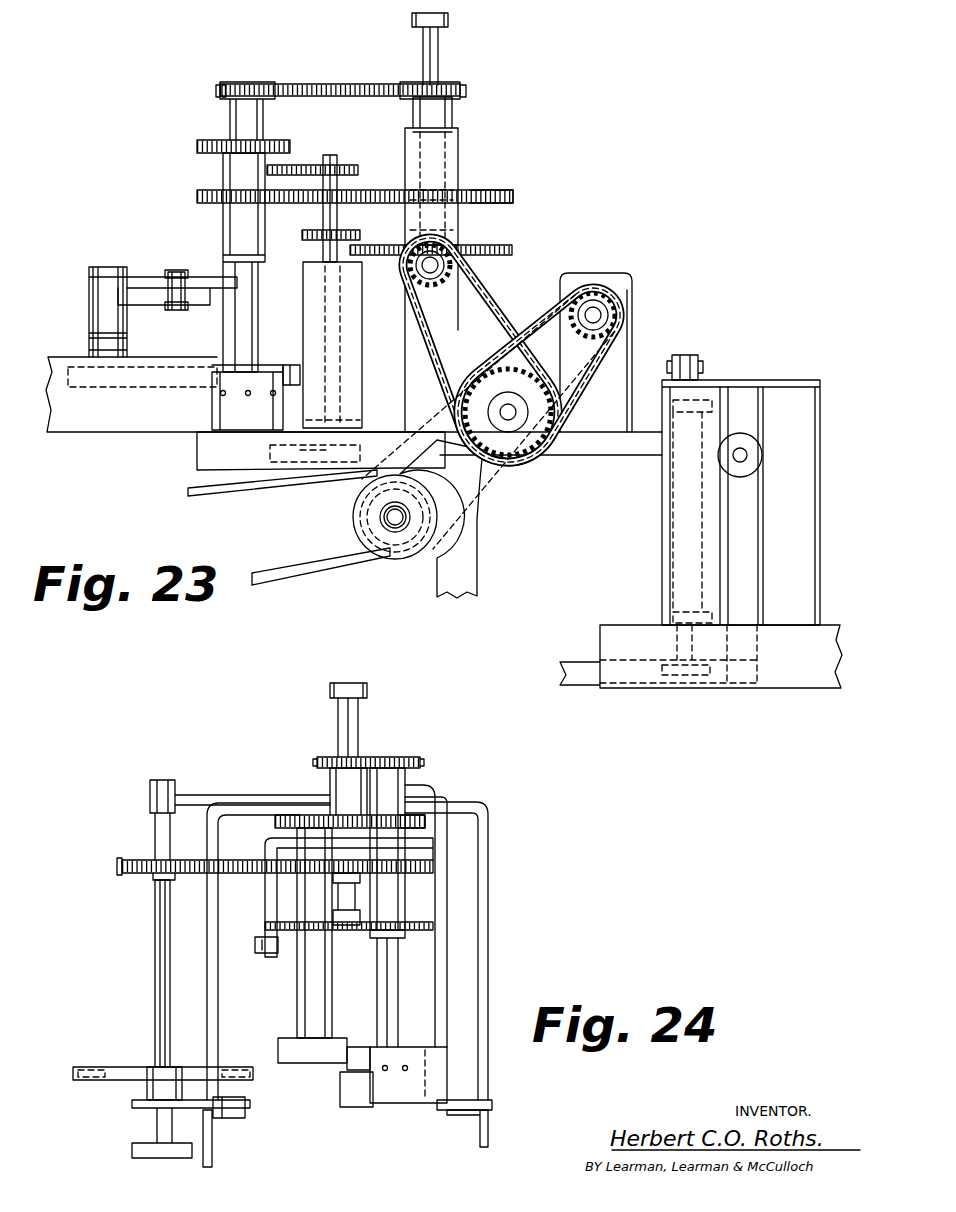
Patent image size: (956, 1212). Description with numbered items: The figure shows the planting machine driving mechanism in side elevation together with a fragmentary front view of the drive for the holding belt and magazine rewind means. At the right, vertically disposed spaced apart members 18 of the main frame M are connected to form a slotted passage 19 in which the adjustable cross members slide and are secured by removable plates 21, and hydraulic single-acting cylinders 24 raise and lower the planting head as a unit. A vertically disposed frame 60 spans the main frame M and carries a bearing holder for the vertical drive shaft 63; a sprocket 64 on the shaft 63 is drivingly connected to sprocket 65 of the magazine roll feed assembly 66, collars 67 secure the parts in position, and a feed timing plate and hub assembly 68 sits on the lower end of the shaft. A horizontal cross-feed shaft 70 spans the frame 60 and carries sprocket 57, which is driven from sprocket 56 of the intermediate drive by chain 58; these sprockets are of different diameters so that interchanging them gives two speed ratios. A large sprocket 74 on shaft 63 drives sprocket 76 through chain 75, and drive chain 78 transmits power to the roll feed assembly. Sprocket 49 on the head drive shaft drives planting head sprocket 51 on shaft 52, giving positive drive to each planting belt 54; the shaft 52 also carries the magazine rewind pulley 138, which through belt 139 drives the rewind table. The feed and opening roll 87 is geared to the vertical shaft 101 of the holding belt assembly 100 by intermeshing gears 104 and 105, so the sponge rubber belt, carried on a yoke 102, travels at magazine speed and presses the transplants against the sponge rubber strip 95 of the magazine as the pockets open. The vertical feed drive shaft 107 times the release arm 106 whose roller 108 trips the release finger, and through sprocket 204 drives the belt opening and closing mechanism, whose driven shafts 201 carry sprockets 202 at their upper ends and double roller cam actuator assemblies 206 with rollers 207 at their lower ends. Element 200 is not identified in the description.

In FIG. 23, the vertically disposed spaced apart members 18 is at (786, 397).
In FIG. 23, the slotted passage 19 is at (740, 397).
In FIG. 23, the removable plates 21 is at (728, 467).
In FIG. 23, the hydraulic single-acting cylinders 24 is at (692, 355).
In FIG. 23, the sprocket 49 is at (601, 300).
In FIG. 23, the planting head sprocket 51 is at (420, 506).
In FIG. 23, the shaft 52 is at (392, 524).
In FIG. 23, the planting belt 54 is at (462, 592).
In FIG. 23, the sprocket 56 is at (523, 443).
In FIG. 23, the sprocket 57 is at (416, 268).
In FIG. 23, the chain 58 is at (493, 307).
In FIG. 23, the vertically disposed frame 60 is at (404, 150).
In FIG. 23, the vertical drive shaft 63 is at (441, 60).
In FIG. 24, the vertical drive shaft 63 is at (360, 728).
In FIG. 23, the sprocket 64 is at (463, 91).
In FIG. 23, the sprocket 65 is at (218, 91).
In FIG. 23, the magazine roll feed assembly 66 is at (247, 83).
In FIG. 23, the collars 67 is at (461, 160).
In FIG. 23, the feed timing plate and hub assembly 68 is at (496, 251).
In FIG. 24, the feed timing plate and hub assembly 68 is at (434, 928).
In FIG. 23, the cross-feed shaft 70 is at (416, 291).
In FIG. 23, the large sprocket 74 is at (512, 195).
In FIG. 24, the large sprocket 74 is at (434, 866).
In FIG. 23, the chain 75 is at (310, 204).
In FIG. 24, the chain 75 is at (242, 860).
In FIG. 23, the sprocket 76 is at (210, 196).
In FIG. 24, the sprocket 76 is at (122, 870).
In FIG. 23, the drive chain 78 is at (336, 84).
In FIG. 24, the drive chain 78 is at (419, 758).
In FIG. 23, the feed and opening roll 87 is at (235, 408).
In FIG. 24, the feed and opening roll 87 is at (420, 1103).
In FIG. 24, the sponge rubber strip 95 is at (358, 1108).
In FIG. 23, the holding belt assembly 100 is at (292, 366).
In FIG. 24, the holding belt assembly 100 is at (312, 1064).
In FIG. 24, the vertical shaft 101 is at (297, 992).
In FIG. 24, the yoke 102 is at (398, 1022).
In FIG. 24, the gear 104 is at (308, 815).
In FIG. 23, the gear 105 is at (291, 147).
In FIG. 24, the gear 105 is at (426, 821).
In FIG. 24, the release arm 106 is at (120, 1086).
In FIG. 24, the vertical feed drive shaft 107 is at (155, 962).
In FIG. 24, the roller 108 is at (150, 1066).
In FIG. 23, the magazine rewind pulley 138 is at (353, 516).
In FIG. 23, the belt 139 is at (216, 495).
In FIG. 23, the block 200 is at (348, 398).
In FIG. 23, the driven shafts 201 is at (338, 216).
In FIG. 23, the sprockets 202 is at (305, 236).
In FIG. 23, the sprocket 204 is at (343, 168).
In FIG. 23, the double roller cam actuator assembly 206 is at (312, 468).
In FIG. 23, the rollers 207 is at (280, 455).
In FIG. 23, the main frame M is at (812, 682).